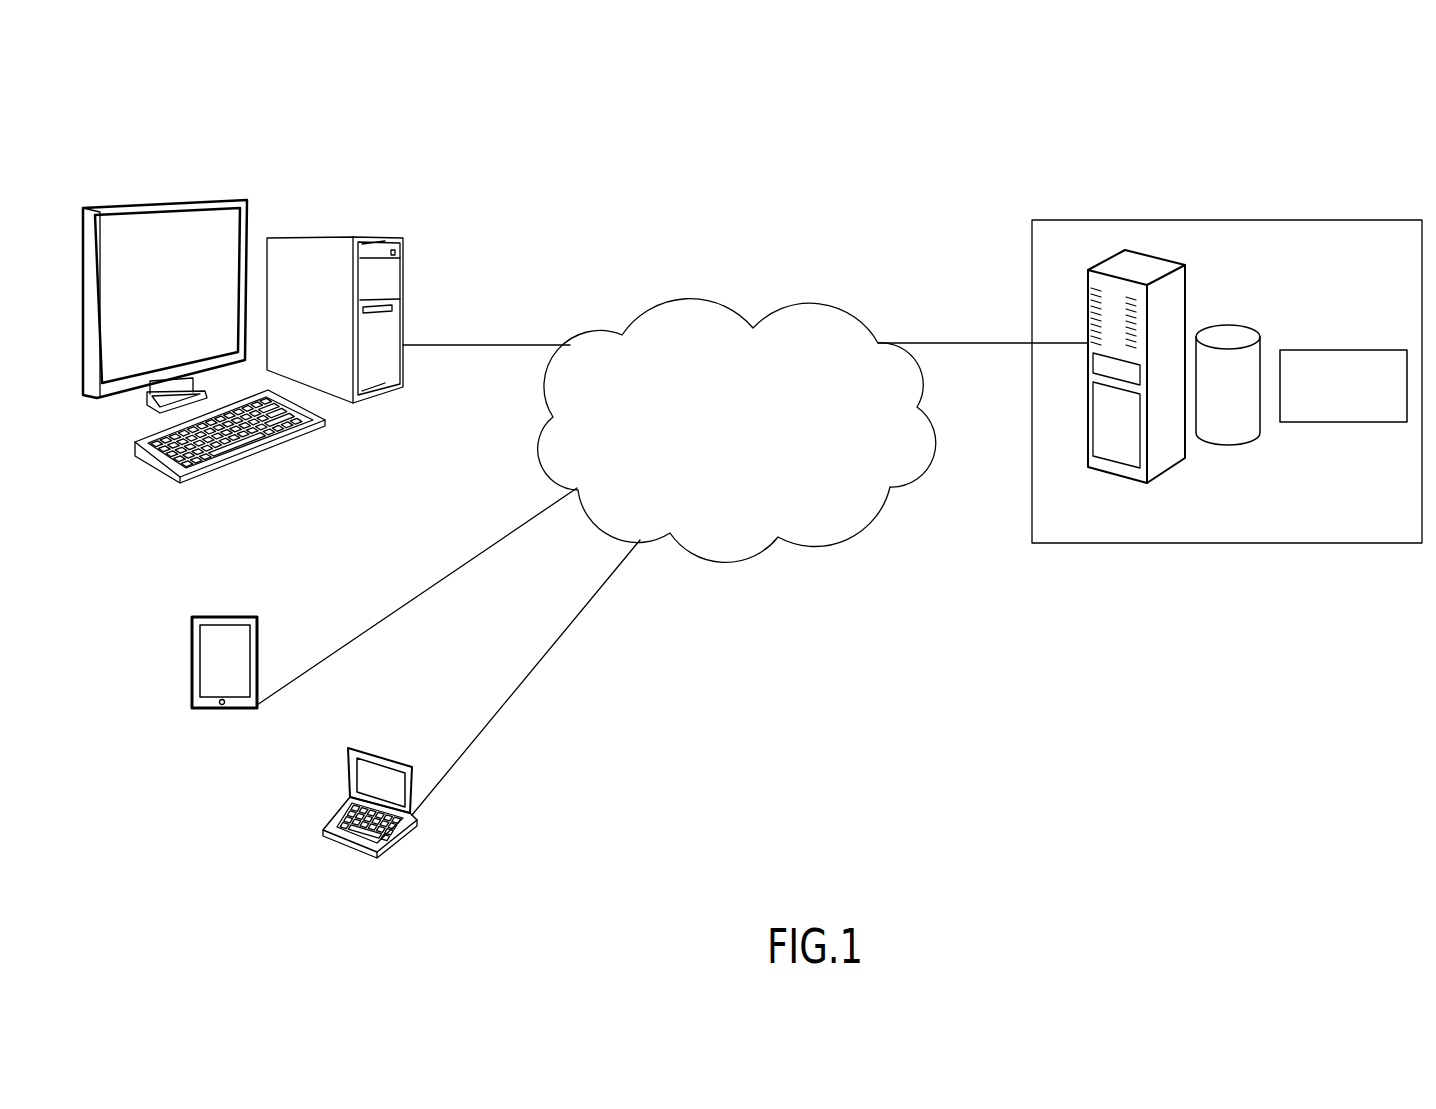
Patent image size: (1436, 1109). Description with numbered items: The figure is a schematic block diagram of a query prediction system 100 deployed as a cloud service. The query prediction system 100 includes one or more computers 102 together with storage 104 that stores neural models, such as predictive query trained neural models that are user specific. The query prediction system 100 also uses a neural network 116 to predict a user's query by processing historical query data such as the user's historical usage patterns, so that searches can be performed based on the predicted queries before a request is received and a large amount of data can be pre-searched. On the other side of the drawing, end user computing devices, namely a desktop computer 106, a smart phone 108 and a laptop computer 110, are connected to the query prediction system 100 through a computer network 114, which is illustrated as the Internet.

The query prediction system 100 is at (1204, 150).
The computers 102 is at (1163, 267).
The storage 104 is at (1223, 330).
The desktop computer 106 is at (169, 150).
The smart phone 108 is at (233, 617).
The laptop computer 110 is at (388, 760).
The computer network 114 is at (765, 203).
The neural network 116 is at (1330, 422).